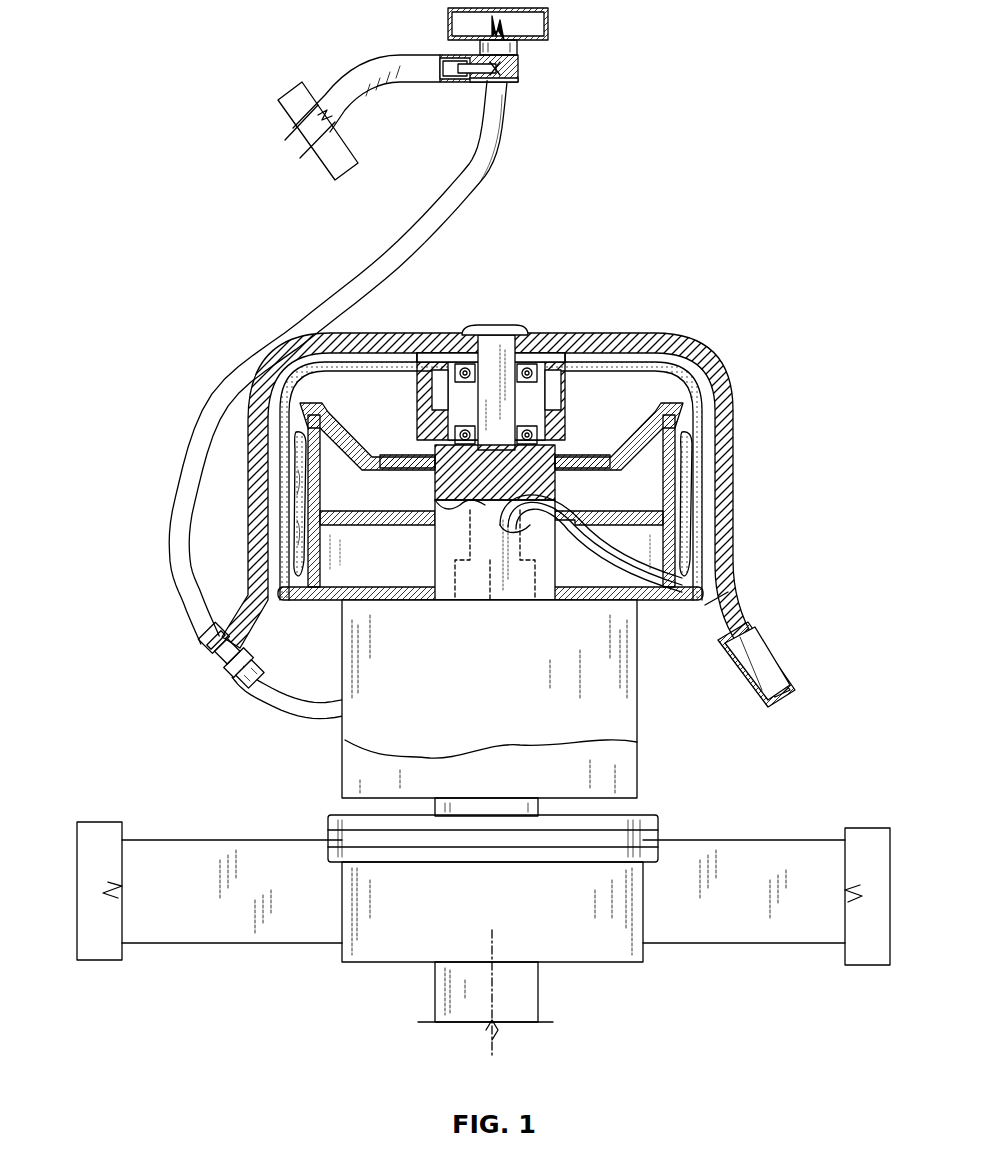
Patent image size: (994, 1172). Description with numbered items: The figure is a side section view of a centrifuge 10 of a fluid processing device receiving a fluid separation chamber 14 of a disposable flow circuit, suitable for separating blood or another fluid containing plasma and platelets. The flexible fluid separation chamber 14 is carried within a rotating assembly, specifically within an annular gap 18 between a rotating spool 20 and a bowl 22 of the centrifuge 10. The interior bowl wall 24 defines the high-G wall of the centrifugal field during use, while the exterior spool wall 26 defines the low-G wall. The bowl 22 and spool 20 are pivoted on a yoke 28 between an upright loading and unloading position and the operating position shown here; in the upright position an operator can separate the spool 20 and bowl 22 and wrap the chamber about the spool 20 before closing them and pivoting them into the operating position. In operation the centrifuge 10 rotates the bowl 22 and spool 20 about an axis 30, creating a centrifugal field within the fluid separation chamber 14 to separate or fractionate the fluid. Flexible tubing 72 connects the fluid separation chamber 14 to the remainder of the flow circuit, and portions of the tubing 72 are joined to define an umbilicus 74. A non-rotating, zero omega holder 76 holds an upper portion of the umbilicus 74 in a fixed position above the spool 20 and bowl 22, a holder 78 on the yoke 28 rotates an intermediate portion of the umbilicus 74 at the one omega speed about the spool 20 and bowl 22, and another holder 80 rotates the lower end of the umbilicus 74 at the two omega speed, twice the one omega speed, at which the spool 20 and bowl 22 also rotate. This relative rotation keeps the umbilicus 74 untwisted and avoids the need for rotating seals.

The centrifuge 10 is at (800, 186).
The fluid separation chamber 14 is at (698, 458).
The annular gap 18 is at (683, 590).
The spool 20 is at (307, 598).
The bowl 22 is at (622, 342).
The interior bowl wall 24 is at (296, 468).
The exterior spool wall 26 is at (690, 490).
The yoke 28 is at (483, 782).
The axis 30 is at (492, 968).
The flexible tubing 72 is at (610, 545).
The umbilicus 74 is at (447, 240).
The non-rotating holder 76 is at (522, 72).
The holder 78 is at (202, 698).
The holder 80 is at (525, 612).